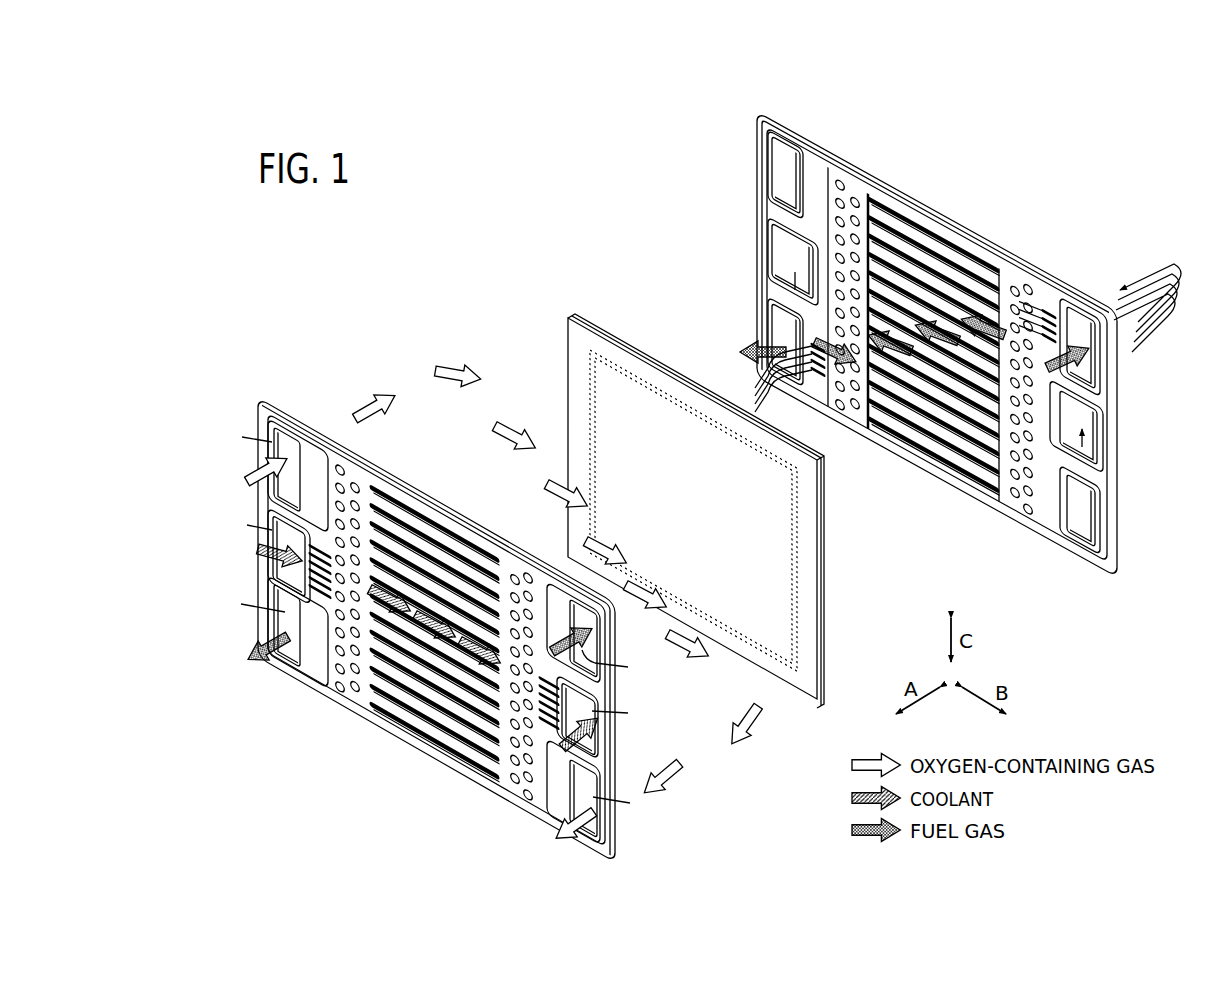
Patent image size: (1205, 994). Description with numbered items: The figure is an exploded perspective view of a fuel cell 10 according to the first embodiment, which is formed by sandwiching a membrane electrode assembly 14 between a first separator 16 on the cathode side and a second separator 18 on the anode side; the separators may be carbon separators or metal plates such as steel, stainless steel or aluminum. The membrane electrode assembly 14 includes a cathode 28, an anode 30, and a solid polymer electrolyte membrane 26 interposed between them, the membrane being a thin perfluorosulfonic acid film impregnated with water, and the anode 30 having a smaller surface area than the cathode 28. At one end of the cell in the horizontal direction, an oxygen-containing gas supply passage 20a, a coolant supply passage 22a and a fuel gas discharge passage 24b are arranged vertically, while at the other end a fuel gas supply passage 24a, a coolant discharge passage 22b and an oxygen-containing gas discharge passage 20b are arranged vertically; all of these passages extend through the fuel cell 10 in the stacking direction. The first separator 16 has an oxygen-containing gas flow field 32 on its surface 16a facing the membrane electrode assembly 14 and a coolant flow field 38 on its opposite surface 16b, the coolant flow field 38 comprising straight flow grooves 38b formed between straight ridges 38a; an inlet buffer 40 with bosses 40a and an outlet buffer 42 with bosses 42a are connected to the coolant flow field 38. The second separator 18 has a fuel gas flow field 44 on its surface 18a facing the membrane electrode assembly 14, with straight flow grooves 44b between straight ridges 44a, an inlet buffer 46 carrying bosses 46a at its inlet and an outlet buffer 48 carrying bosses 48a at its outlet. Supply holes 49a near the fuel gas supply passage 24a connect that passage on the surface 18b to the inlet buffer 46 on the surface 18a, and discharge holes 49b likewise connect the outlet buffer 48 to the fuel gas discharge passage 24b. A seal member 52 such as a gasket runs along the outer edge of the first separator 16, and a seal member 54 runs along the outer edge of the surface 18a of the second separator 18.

The fuel cell 10 is at (448, 249).
The membrane electrode assembly 14 is at (669, 492).
The first separator 16 is at (431, 638).
The surface of the first separator 16a is at (442, 762).
The surface of the first separator 16b is at (440, 755).
The second separator 18 is at (939, 356).
The surface of the second separator 18a is at (960, 477).
The surface of the second separator 18b is at (968, 492).
The oxygen-containing gas supply passage 20a is at (298, 476).
The oxygen-containing gas discharge passage 20b is at (573, 791).
The coolant supply passage 22a is at (299, 562).
The coolant discharge passage 22b is at (569, 712).
The fuel gas supply passage 24a is at (573, 633).
The fuel gas discharge passage 24b is at (298, 632).
The solid polymer electrolyte membrane 26 is at (590, 404).
The cathode 28 is at (693, 510).
The anode 30 is at (636, 356).
The oxygen-containing gas flow field 32 is at (430, 640).
The coolant flow field 38 is at (460, 510).
The straight ridges 38a is at (385, 495).
The straight flow grooves 38b is at (413, 520).
The inlet buffer 40 is at (326, 596).
The bosses 40a is at (333, 645).
The outlet buffer 42 is at (516, 690).
The bosses 42a is at (525, 668).
The fuel gas flow field 44 is at (933, 359).
The straight ridges 44a is at (888, 410).
The straight flow grooves 44b is at (910, 480).
The inlet buffer 46 is at (1065, 446).
The bosses 46a is at (1017, 419).
The outlet buffer 48 is at (874, 292).
The bosses 48a is at (851, 282).
The supply holes 49a is at (1040, 318).
The discharge holes 49b is at (810, 430).
The seal member 52 is at (507, 548).
The seal member 54 is at (1003, 290).